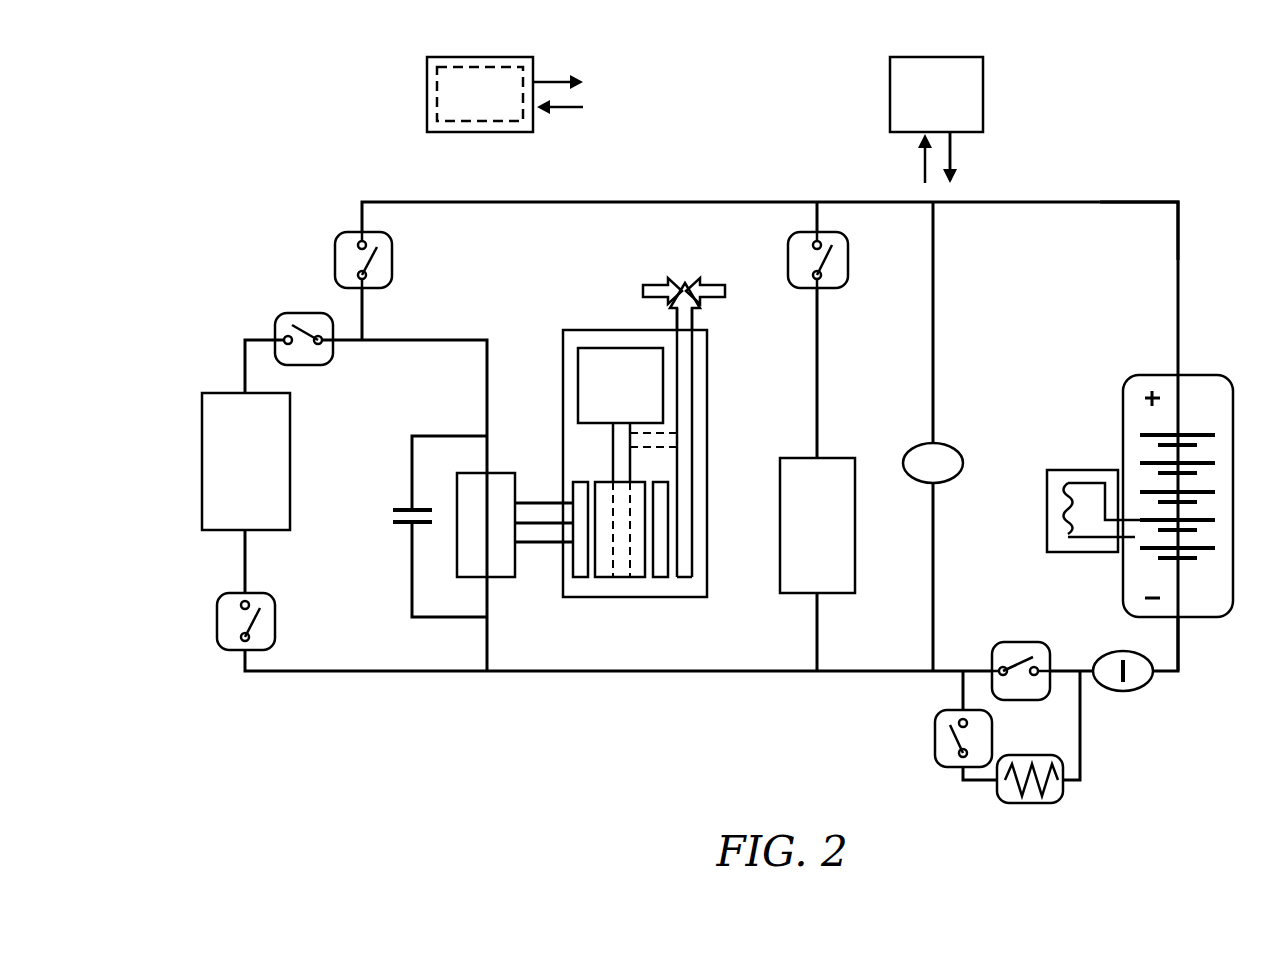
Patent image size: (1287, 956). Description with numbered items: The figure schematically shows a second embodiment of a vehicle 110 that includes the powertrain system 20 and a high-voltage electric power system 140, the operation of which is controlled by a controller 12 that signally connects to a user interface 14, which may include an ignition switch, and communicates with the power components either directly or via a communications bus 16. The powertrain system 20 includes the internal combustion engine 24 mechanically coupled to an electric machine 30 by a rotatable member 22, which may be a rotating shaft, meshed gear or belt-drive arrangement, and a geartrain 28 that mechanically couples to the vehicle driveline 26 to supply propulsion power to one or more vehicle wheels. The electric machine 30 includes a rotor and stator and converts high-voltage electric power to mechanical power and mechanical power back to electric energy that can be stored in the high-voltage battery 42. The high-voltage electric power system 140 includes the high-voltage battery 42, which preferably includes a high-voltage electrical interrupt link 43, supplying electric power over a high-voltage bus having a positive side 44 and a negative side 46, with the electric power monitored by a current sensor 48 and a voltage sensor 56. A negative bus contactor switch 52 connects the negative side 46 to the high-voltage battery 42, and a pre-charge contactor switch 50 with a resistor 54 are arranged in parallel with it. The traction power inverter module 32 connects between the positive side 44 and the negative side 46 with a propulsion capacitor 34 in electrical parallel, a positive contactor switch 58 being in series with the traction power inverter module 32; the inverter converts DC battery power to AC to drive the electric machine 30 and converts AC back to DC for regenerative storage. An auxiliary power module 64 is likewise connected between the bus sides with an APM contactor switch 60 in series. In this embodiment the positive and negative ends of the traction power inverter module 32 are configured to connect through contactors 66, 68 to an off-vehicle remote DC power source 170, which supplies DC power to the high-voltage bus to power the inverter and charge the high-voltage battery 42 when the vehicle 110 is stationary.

The vehicle 110 is at (289, 154).
The high-voltage electric power system 140 is at (405, 202).
The user interface 14 is at (505, 94).
The controller 12 is at (936, 120).
The communications bus 16 is at (952, 155).
The positive side of the high-voltage bus (HV+) 44 is at (1127, 200).
The positive contactor switch 58 is at (335, 260).
The contactor 66 is at (275, 338).
The remote DC power source 170 is at (246, 461).
The contactor 68 is at (217, 622).
The propulsion capacitor 34 is at (395, 516).
The traction power inverter module (TPIM) 32 is at (515, 525).
The powertrain system 20 is at (570, 330).
The internal combustion engine 24 is at (620, 385).
The rotatable member 22 is at (612, 460).
The electric machine 30 is at (588, 578).
The geartrain 28 is at (690, 398).
The vehicle driveline 26 is at (648, 288).
The APM contactor switch 60 is at (788, 262).
The auxiliary power module (APM) 64 is at (817, 525).
The voltage sensor 56 is at (963, 462).
The high-voltage battery 42 is at (1190, 465).
The high-voltage electrical interrupt link 43 is at (1085, 470).
The negative bus contactor switch 52 is at (1020, 642).
The pre-charge contactor switch 50 is at (935, 738).
The resistor 54 is at (1065, 785).
The current sensor 48 is at (1140, 690).
The negative side of the high-voltage bus (HV−) 46 is at (1180, 645).